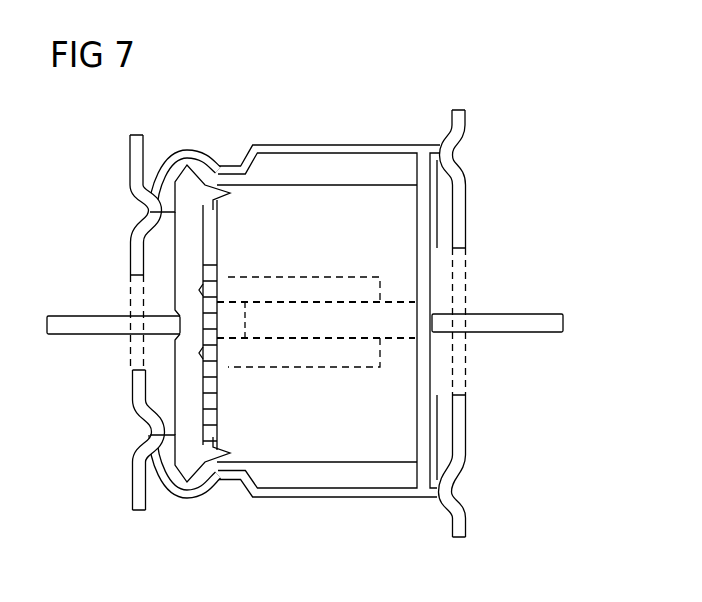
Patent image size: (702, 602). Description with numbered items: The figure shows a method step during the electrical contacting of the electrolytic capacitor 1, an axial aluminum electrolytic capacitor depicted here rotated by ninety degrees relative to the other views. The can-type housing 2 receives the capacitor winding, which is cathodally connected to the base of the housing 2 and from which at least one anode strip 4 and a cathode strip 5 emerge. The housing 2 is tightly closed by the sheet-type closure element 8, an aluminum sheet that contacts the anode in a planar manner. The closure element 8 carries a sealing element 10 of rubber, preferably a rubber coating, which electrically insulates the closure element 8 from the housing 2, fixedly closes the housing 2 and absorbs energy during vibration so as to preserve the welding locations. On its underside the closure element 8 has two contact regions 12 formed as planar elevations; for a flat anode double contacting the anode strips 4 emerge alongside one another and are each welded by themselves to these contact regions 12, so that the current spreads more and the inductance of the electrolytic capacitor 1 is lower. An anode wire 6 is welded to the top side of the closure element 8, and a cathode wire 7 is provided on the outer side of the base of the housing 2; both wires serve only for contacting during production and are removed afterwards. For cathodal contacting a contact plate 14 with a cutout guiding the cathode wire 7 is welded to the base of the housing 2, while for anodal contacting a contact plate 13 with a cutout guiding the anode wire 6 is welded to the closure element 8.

The electrolytic capacitor 1 is at (515, 141).
The housing 2 is at (330, 498).
The anode strip 4 is at (313, 280).
The cathode strip 5 is at (396, 305).
The anode wire 6 is at (86, 324).
The cathode wire 7 is at (537, 316).
The closure element 8 is at (160, 463).
The sealing element 10 is at (207, 487).
The contact region 12 is at (218, 290).
The contact plate 13 is at (130, 378).
The contact plate 14 is at (466, 410).